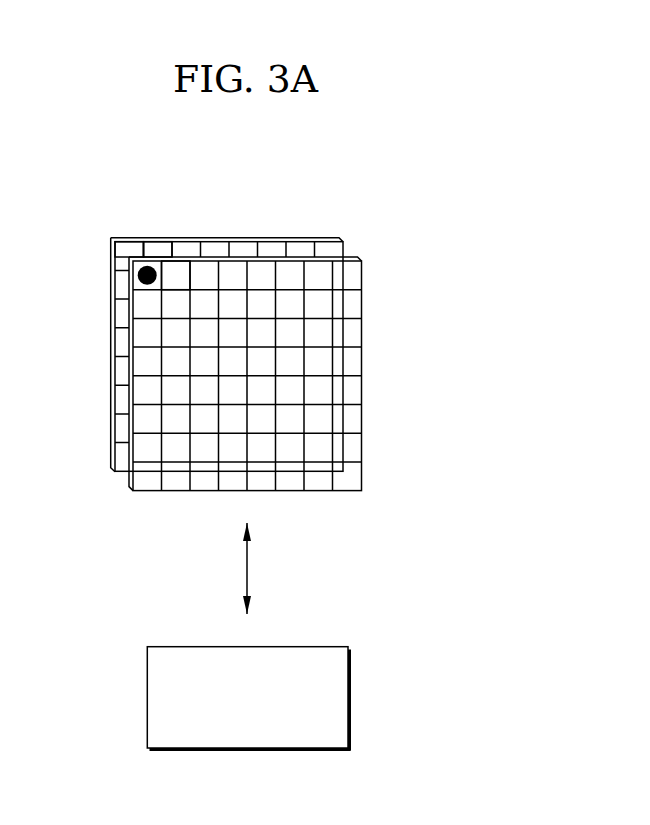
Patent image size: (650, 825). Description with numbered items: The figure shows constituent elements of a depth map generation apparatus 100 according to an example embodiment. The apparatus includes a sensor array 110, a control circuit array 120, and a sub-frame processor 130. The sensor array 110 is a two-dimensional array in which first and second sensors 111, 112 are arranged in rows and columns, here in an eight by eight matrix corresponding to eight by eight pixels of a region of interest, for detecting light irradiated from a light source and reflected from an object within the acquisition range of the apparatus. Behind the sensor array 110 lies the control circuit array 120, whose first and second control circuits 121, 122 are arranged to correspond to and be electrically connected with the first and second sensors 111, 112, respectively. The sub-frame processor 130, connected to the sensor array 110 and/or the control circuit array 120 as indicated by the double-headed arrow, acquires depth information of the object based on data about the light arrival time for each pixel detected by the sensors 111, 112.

The depth map generation apparatus 100 is at (53, 172).
The sensor array 110 is at (123, 497).
The first sensor 111 is at (136, 278).
The second sensor 112 is at (178, 268).
The control circuit array 120 is at (95, 463).
The first control circuit 121 is at (127, 247).
The second control circuit 122 is at (157, 247).
The sub-frame processor 130 is at (278, 646).